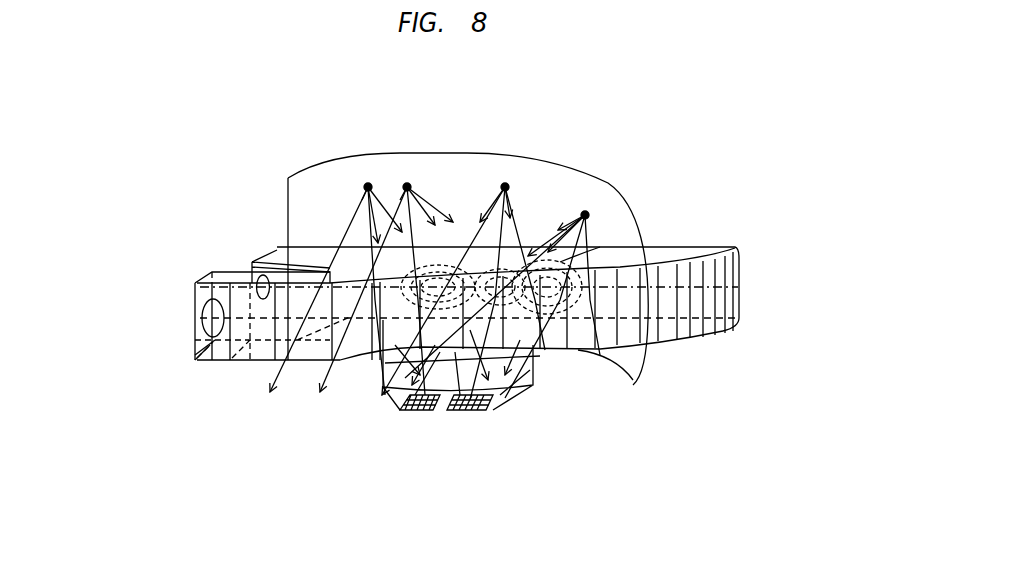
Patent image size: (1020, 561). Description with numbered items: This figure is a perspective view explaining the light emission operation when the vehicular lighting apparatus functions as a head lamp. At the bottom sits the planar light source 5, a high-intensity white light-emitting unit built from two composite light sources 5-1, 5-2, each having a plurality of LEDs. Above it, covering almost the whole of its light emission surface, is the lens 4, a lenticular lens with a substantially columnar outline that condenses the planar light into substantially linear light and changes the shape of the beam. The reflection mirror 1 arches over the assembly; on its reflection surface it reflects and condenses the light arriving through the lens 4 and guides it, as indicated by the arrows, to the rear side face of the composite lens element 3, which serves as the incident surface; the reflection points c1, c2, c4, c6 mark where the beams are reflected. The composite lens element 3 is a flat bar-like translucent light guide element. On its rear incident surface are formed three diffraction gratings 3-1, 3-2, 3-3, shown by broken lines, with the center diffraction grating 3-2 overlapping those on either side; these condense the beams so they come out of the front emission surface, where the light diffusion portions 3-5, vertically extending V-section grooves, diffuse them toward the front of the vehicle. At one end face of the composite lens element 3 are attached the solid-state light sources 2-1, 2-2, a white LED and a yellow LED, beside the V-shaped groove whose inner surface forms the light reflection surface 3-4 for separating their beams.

The reflection mirror 1 is at (574, 168).
The solid-state light source 2-1 is at (204, 312).
The solid-state light source 2-2 is at (252, 268).
The composite lens element 3 is at (706, 247).
The diffraction grating 3-1 is at (443, 255).
The diffraction grating 3-2 is at (530, 250).
The diffraction grating 3-3 is at (595, 248).
The light reflection surface 3-4 is at (260, 277).
The light diffusion portions 3-5 is at (210, 362).
The lens 4 is at (497, 385).
The planar light source 5 is at (454, 444).
The composite light source 5-1 is at (425, 413).
The composite light source 5-2 is at (487, 413).
The reflection point c1 is at (368, 182).
The reflection point c2 is at (408, 182).
The reflection point c4 is at (506, 182).
The reflection point c6 is at (588, 212).